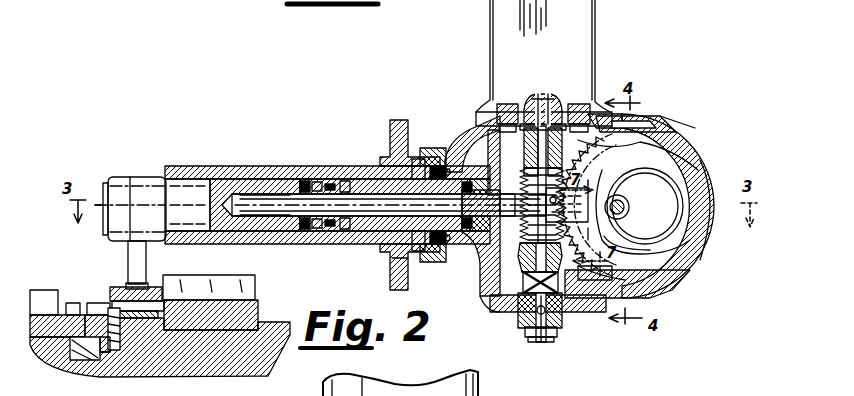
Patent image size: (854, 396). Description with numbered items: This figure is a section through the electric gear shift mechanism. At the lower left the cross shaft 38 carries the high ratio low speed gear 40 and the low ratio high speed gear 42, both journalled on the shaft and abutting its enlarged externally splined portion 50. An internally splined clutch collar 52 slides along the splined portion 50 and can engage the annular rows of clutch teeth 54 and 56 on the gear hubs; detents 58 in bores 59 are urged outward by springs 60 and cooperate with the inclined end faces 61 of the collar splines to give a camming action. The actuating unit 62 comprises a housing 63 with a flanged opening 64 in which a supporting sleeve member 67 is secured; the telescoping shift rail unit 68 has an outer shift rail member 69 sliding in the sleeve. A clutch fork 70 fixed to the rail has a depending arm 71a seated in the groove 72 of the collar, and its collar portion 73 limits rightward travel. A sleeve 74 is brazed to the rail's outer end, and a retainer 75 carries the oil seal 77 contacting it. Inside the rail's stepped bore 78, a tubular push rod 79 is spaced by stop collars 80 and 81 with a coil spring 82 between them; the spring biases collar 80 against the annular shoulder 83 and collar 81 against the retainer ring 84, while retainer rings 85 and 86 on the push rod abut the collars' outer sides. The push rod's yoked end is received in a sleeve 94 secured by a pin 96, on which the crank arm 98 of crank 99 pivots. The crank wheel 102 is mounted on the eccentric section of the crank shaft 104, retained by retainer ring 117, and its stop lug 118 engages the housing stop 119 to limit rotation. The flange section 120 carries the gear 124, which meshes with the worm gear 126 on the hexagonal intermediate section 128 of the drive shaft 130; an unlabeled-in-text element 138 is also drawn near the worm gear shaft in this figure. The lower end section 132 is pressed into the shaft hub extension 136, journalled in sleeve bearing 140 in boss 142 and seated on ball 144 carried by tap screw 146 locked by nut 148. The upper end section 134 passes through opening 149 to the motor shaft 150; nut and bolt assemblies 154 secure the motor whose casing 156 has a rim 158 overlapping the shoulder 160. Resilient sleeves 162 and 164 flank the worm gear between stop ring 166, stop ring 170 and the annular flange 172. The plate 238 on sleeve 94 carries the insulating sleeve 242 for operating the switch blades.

The cross shaft 38 is at (222, 372).
The high ratio low speed gear 40 is at (45, 290).
The low ratio high speed gear 42 is at (252, 282).
The enlarged externally splined portion 50 is at (94, 302).
The clutch collar 52 is at (152, 286).
The clutch teeth 54 is at (160, 312).
The clutch teeth 56 is at (57, 326).
The detents 58 is at (122, 320).
The bores 59 is at (112, 348).
The springs 60 is at (104, 360).
The inclined end faces 61 is at (85, 348).
The actuating unit 62 is at (726, 237).
The housing 63 is at (708, 220).
The flanged opening 64 is at (416, 124).
The supporting sleeve member 67 is at (233, 170).
The power storage telescoping shift rail unit 68 is at (190, 156).
The outer cylindrical shift rail member 69 is at (248, 170).
The clutch fork 70 is at (113, 250).
The depending arm 71a is at (146, 252).
The annularly formed groove 72 is at (127, 282).
The collar portion 73 is at (136, 176).
The sleeve 74 is at (440, 156).
The retainer 75 is at (398, 272).
The oil seal 77 is at (435, 250).
The axial stepped bore 78 is at (345, 180).
The tubular push rod 79 is at (296, 246).
The stop collar 80 is at (314, 180).
The stop collar 81 is at (327, 194).
The coil spring 82 is at (330, 182).
The annular shoulder 83 is at (300, 172).
The retainer ring 84 is at (492, 196).
The retainer ring 85 is at (292, 206).
The retainer ring 86 is at (466, 244).
The sleeve 94 is at (635, 212).
The pin 96 is at (568, 191).
The crank arm 98 is at (577, 205).
The crank 99 is at (678, 190).
The crank wheel 102 is at (668, 170).
The crank shaft 104 is at (630, 198).
The retainer ring 117 is at (677, 200).
The stop lug 118 is at (627, 284).
The stop 119 is at (605, 284).
The flange section 120 is at (667, 116).
The gear 124 is at (632, 124).
The worm gear 126 is at (524, 238).
The intermediate section 128 is at (523, 152).
The drive shaft 130 is at (579, 103).
The cylindrical end section 132 is at (540, 268).
The cylindrical end section 134 is at (543, 92).
The shaft hub extension 136 is at (568, 310).
The coupling 138 is at (564, 136).
The sleeve bearing 140 is at (518, 310).
The apertured boss 142 is at (527, 337).
The ball 144 is at (538, 342).
The tap screw 146 is at (546, 340).
The nut 148 is at (558, 332).
The opening 149 is at (522, 121).
The motor shaft 150 is at (558, 97).
The nut and bolt assemblies 154 is at (506, 103).
The casing 156 is at (490, 27).
The rim 158 is at (483, 104).
The shoulder 160 is at (482, 124).
The resilient rubber sleeve 162 is at (523, 136).
The resilient rubber sleeve 164 is at (524, 270).
The curved stop ring 166 is at (494, 203).
The curved stop ring 170 is at (522, 258).
The annular flange 172 is at (498, 302).
The flat-sided plate 238 is at (596, 278).
The insulating sleeve 242 is at (630, 239).